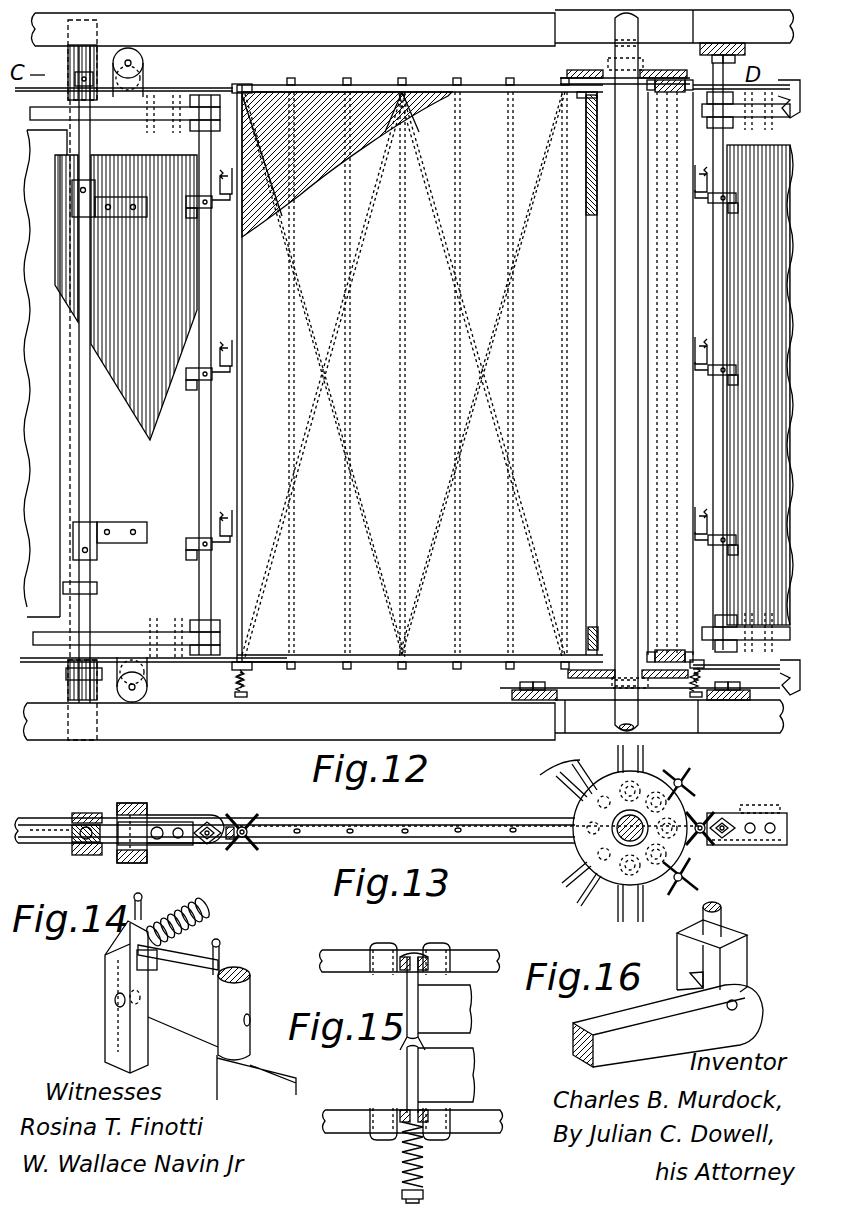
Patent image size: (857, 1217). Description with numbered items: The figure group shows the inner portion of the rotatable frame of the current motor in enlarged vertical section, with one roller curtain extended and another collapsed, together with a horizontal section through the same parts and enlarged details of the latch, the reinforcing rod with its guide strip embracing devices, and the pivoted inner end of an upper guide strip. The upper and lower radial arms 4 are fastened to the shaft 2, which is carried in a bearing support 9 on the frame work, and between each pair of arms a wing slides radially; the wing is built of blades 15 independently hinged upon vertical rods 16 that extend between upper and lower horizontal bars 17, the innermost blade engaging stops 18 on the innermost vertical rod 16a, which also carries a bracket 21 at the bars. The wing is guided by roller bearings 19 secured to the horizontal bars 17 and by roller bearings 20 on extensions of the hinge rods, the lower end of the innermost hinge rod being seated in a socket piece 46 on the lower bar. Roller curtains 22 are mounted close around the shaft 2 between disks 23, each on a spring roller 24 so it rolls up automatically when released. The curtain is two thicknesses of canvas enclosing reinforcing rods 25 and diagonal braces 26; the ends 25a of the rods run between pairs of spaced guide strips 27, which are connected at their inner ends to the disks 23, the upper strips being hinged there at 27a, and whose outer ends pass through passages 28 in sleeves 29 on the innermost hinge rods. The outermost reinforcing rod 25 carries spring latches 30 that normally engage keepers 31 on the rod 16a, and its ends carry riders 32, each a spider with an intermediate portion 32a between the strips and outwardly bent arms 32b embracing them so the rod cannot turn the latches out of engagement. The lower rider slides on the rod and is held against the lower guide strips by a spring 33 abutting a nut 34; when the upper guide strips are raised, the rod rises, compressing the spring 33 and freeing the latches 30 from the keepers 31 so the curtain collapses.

In FIG. 12, the shaft 2 is at (640, 40).
In FIG. 13, the shaft 2 is at (625, 840).
In FIG. 12, the radial arms 4 is at (409, 375).
In FIG. 12, the bearing plate 9 is at (738, 48).
In FIG. 12, the blades 15 is at (785, 478).
In FIG. 12, the vertical rods 16 is at (86, 392).
In FIG. 13, the vertical rods 16 is at (70, 838).
In FIG. 12, the innermost vertical rod 16a is at (240, 425).
In FIG. 13, the innermost vertical rod 16a is at (207, 845).
In FIG. 12, the horizontal bars 17 is at (115, 120).
In FIG. 13, the horizontal bars 17 is at (200, 815).
In FIG. 12, the stops 18 is at (215, 208).
In FIG. 12, the roller bearings 19 is at (145, 63).
In FIG. 13, the roller bearings 19 is at (148, 808).
In FIG. 12, the roller bearings 20 is at (98, 40).
In FIG. 12, the guide rod 21 is at (186, 216).
In FIG. 12, the roller curtains 22 is at (608, 373).
In FIG. 13, the roller curtains 22 is at (340, 818).
In FIG. 14, the roller curtains 22 is at (256, 1082).
In FIG. 15, the roller curtains 22 is at (474, 1046).
In FIG. 12, the disks 23 is at (598, 70).
In FIG. 12, the spring roller 24 is at (586, 262).
In FIG. 13, the spring roller 24 is at (580, 848).
In FIG. 12, the reinforcing rods 25 is at (240, 96).
In FIG. 13, the reinforcing rods 25 is at (445, 818).
In FIG. 14, the reinforcing rods 25 is at (246, 1003).
In FIG. 15, the reinforcing rods 25 is at (407, 1073).
In FIG. 12, the ends of the rods 25a is at (400, 88).
In FIG. 12, the diagonal braces 26 is at (346, 300).
In FIG. 12, the guide strips 27 is at (484, 88).
In FIG. 13, the guide strips 27 is at (567, 788).
In FIG. 15, the guide strips 27 is at (338, 950).
In FIG. 16, the guide strips 27 is at (668, 984).
In FIG. 12, the hinge of upper guide strips 27a is at (584, 96).
In FIG. 16, the hinge of upper guide strips 27a is at (738, 1004).
In FIG. 13, the passages 28 is at (96, 812).
In FIG. 12, the sleeves 29 is at (78, 100).
In FIG. 13, the sleeves 29 is at (72, 822).
In FIG. 12, the spring latches 30 is at (222, 180).
In FIG. 14, the spring latches 30 is at (105, 1024).
In FIG. 12, the keepers 31 is at (250, 215).
In FIG. 12, the riders 32 is at (250, 86).
In FIG. 13, the riders 32 is at (248, 815).
In FIG. 15, the riders 32 is at (402, 955).
In FIG. 15, the intermediate portion 32a is at (422, 970).
In FIG. 15, the outwardly bent arms 32b is at (452, 946).
In FIG. 12, the spring 33 is at (240, 690).
In FIG. 15, the spring 33 is at (425, 1155).
In FIG. 12, the nut 34 is at (248, 672).
In FIG. 15, the nut 34 is at (426, 1196).
In FIG. 12, the socket pieces 46 is at (78, 605).